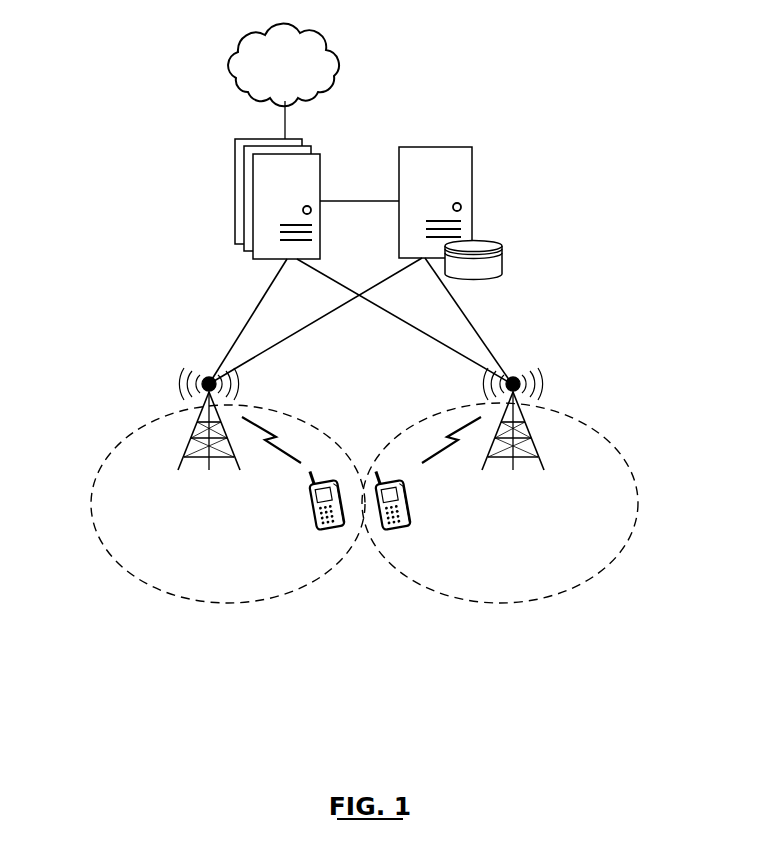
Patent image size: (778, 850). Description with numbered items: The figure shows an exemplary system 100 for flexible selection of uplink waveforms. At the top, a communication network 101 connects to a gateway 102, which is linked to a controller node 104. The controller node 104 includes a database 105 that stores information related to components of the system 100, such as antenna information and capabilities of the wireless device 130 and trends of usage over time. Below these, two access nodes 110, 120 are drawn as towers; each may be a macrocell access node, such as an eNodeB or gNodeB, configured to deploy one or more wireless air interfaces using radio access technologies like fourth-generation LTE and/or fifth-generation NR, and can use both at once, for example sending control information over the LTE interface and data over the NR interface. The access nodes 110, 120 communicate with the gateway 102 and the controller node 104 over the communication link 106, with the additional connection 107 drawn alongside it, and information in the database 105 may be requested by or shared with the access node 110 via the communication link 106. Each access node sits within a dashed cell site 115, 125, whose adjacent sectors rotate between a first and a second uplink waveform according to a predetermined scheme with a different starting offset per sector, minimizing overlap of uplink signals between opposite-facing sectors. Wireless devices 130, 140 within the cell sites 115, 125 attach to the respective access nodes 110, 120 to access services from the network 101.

The system 100 is at (419, 40).
The communication network 101 is at (268, 78).
The gateway 102 is at (237, 173).
The controller node 104 is at (472, 188).
The database 105 is at (502, 262).
The communication link 106 is at (342, 286).
The backhaul link 107 is at (312, 324).
The access node 110 is at (190, 448).
The cell site 115 is at (118, 566).
The access node 120 is at (530, 451).
The cell site 125 is at (603, 570).
The wireless device 130 is at (325, 527).
The wireless device 140 is at (397, 527).